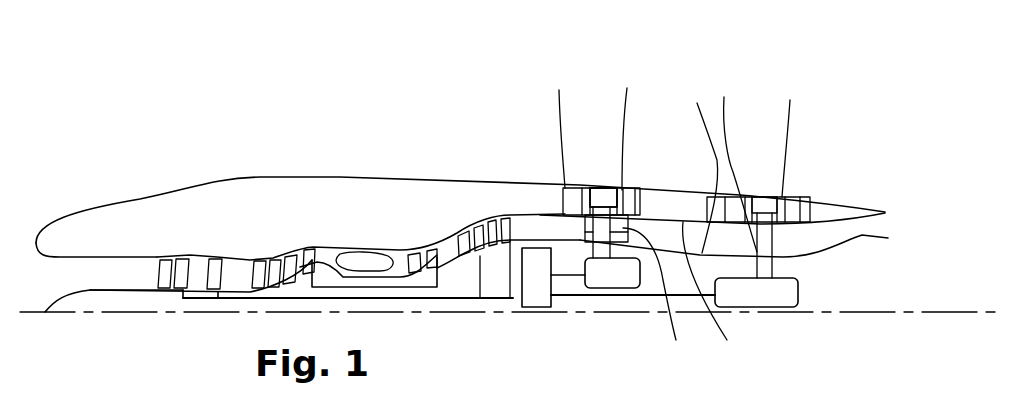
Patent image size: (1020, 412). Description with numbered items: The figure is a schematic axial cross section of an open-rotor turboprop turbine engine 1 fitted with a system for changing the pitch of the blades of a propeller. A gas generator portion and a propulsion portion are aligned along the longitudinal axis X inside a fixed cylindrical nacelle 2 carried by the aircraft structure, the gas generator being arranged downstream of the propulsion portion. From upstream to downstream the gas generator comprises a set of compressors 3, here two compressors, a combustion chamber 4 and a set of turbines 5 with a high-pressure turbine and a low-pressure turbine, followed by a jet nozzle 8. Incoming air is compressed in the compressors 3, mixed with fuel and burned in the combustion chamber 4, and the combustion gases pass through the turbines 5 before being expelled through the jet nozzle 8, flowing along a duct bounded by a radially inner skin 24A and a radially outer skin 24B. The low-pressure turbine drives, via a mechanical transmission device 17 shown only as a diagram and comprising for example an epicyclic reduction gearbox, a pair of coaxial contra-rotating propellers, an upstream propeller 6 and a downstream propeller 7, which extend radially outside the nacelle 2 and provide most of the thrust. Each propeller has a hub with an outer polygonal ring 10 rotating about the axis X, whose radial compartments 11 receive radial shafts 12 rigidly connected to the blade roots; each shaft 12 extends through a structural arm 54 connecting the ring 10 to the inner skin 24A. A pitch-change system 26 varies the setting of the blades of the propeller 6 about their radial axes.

The turbine engine 1 is at (148, 142).
The nacelle 2 is at (312, 192).
The set of compressors 3 is at (262, 229).
The combustion chamber 4 is at (352, 267).
The set of turbines 5 is at (451, 215).
The upstream propeller 6 is at (604, 80).
The downstream propeller 7 is at (756, 100).
The jet nozzle 8 is at (902, 253).
The outer polygonal ring 10 is at (577, 197).
The radial cylindrical compartments 11 is at (618, 205).
The radial shafts 12 is at (590, 200).
The mechanical transmission device 17 is at (538, 285).
The pitch-change system 26 is at (614, 275).
The structural arm 54 is at (659, 298).
The radially inner skin 24A is at (740, 301).
The radially outer skin 24B is at (690, 166).
The longitudinal axis X is at (105, 311).